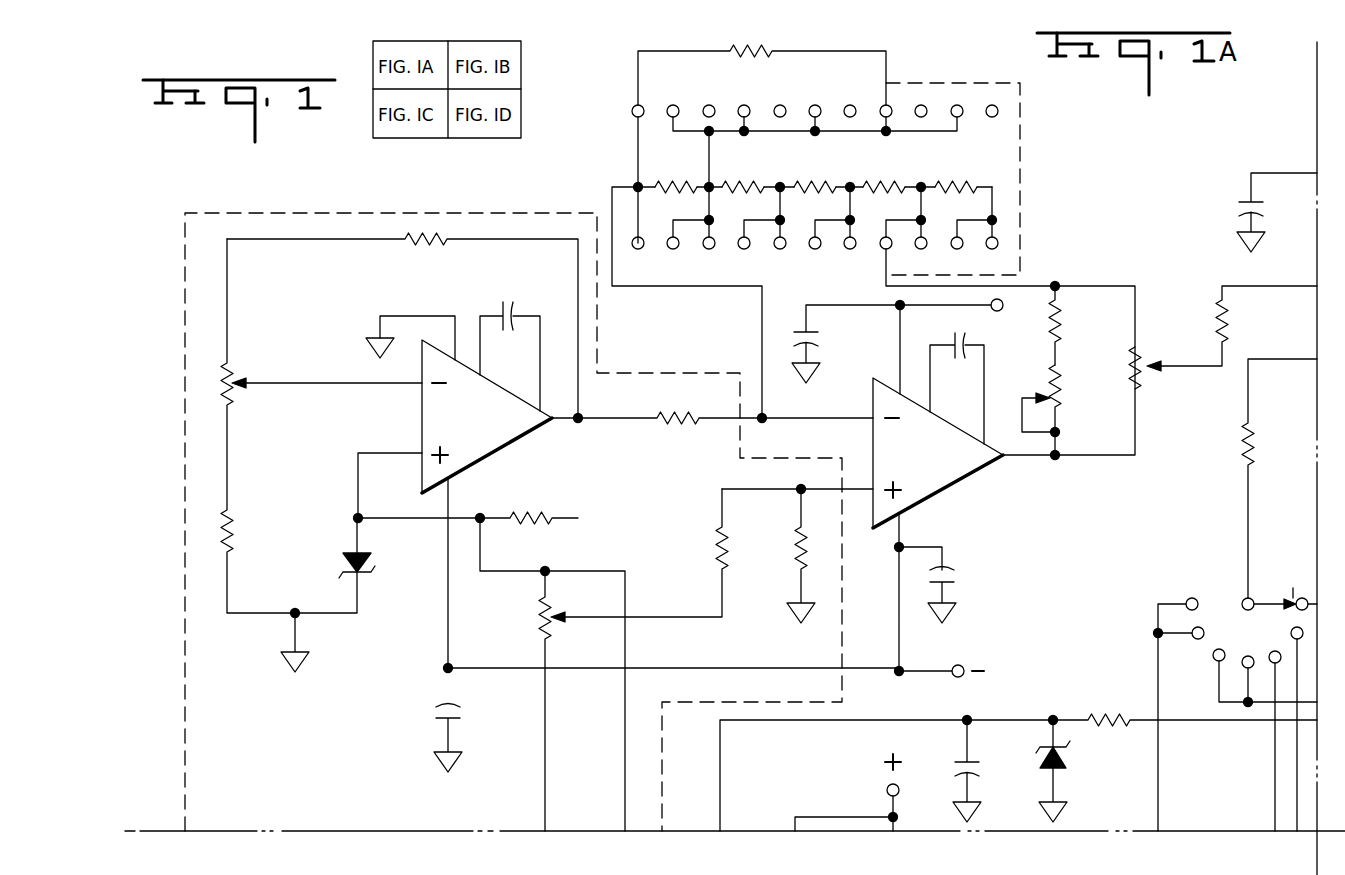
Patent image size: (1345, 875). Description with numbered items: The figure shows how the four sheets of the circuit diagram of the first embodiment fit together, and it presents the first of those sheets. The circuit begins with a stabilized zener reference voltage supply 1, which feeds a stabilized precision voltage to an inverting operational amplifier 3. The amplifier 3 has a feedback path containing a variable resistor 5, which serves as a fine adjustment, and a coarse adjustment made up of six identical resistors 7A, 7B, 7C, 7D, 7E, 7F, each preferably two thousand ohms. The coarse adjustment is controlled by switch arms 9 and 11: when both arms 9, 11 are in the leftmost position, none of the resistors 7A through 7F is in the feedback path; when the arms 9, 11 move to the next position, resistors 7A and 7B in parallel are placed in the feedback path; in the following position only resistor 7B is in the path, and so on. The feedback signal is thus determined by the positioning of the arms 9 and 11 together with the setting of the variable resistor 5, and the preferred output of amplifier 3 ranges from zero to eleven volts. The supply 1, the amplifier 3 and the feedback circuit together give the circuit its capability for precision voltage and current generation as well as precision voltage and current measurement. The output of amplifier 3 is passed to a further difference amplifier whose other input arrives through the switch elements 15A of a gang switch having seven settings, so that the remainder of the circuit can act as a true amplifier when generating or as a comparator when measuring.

The stabilized zener reference voltage supply 1 is at (182, 618).
The inverting operational amplifier 3 is at (947, 488).
The variable resistor 5 is at (1061, 398).
The resistor 7A is at (746, 51).
The resistor 7B is at (670, 186).
The resistor 7C is at (756, 186).
The resistor 7D is at (832, 186).
The resistor 7E is at (901, 186).
The resistor 7F is at (971, 186).
The switch arm 9 is at (883, 99).
The switch arm 11 is at (884, 259).
The switch elements 15A is at (1229, 607).